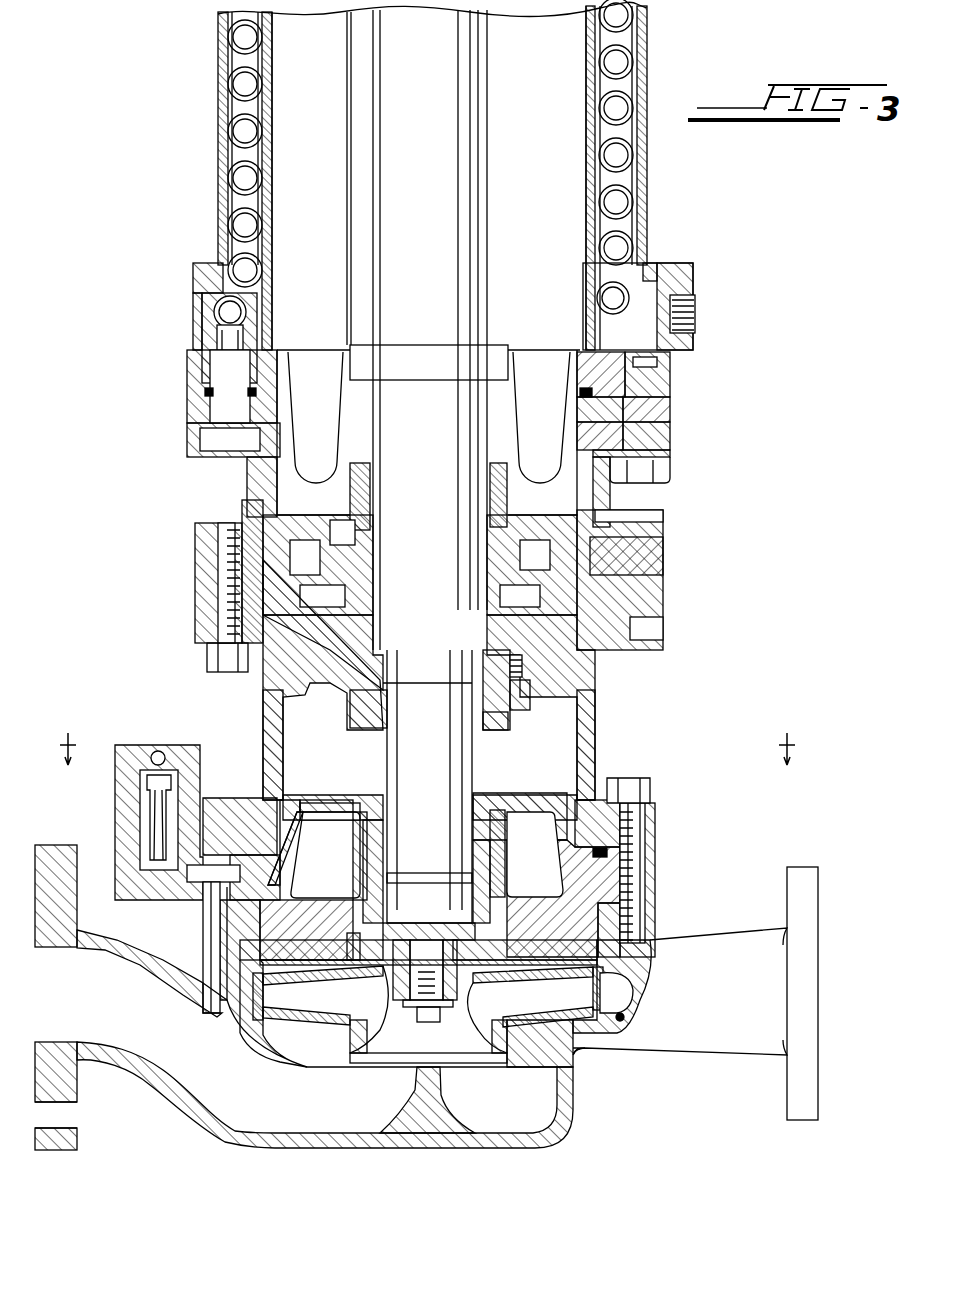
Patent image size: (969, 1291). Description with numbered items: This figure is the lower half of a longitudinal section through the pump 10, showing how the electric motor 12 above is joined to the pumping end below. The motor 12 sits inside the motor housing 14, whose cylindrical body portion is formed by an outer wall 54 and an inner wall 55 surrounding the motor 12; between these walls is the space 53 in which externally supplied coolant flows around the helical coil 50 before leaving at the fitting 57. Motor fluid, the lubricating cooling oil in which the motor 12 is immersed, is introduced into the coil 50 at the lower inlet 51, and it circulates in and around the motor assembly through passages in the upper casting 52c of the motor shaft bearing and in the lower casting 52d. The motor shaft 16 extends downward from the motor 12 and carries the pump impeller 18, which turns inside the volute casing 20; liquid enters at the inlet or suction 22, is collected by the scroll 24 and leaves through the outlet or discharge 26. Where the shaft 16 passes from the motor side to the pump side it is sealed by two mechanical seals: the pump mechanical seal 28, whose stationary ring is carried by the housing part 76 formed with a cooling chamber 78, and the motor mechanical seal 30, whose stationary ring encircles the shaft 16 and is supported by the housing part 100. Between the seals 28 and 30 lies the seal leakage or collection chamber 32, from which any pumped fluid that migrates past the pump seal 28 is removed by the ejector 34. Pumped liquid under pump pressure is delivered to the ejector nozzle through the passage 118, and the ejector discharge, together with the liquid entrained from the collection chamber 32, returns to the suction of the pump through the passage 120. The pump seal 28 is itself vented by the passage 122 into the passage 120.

The pump 10 is at (821, 409).
The electric motor 12 is at (480, 208).
The motor housing 14 is at (658, 49).
The motor shaft 16 is at (438, 716).
The pump impeller 18 is at (384, 1030).
The volute casing 20 is at (648, 978).
The inlet or suction 22 is at (84, 1002).
The scroll 24 is at (627, 1018).
The outlet or discharge 26 is at (780, 972).
The pump mechanical seal 28 is at (505, 832).
The motor mechanical seal 30 is at (512, 712).
The seal leakage or collection chamber 32 is at (343, 754).
The ejector 34 is at (219, 785).
The helical coil 50 is at (637, 98).
The lower inlet 51 is at (232, 355).
The upper casting 52c is at (492, 510).
The lower casting 52d is at (222, 445).
The space 53 is at (641, 78).
The outer wall 54 is at (222, 112).
The inner wall 55 is at (272, 148).
The fitting 57 is at (696, 312).
The housing part 76 is at (520, 800).
The cooling chamber 78 is at (546, 881).
The housing part 100 is at (495, 728).
The passage 118 is at (162, 752).
The passage 120 is at (205, 912).
The passage 122 is at (340, 812).